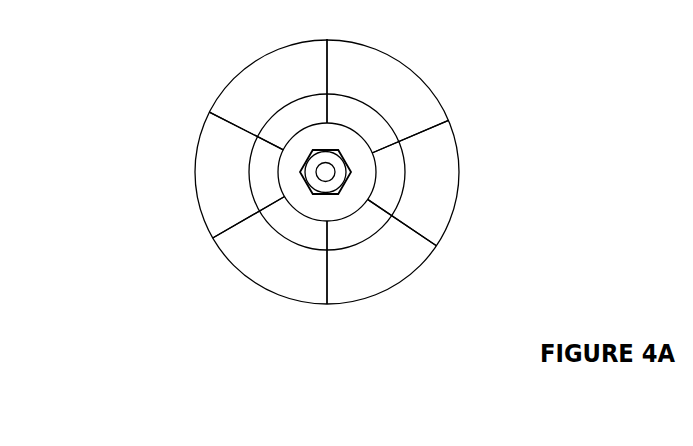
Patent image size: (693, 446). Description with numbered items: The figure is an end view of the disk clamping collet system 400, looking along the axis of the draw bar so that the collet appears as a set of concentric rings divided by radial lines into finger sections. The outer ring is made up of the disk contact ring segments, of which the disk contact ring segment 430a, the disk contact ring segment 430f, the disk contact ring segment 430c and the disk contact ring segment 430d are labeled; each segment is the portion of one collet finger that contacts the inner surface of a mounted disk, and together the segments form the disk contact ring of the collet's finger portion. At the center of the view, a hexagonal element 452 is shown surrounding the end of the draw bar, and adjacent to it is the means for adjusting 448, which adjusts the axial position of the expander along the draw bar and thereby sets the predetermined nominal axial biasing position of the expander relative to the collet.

The disk clamping collet system 400 is at (525, 303).
The disk contact ring segment 430a is at (258, 77).
The disk contact ring segment 430f is at (388, 76).
The disk contact ring segment 430c is at (450, 203).
The disk contact ring segment 430d is at (213, 205).
The hex nut 452 is at (340, 148).
The means for adjusting 448 is at (345, 171).